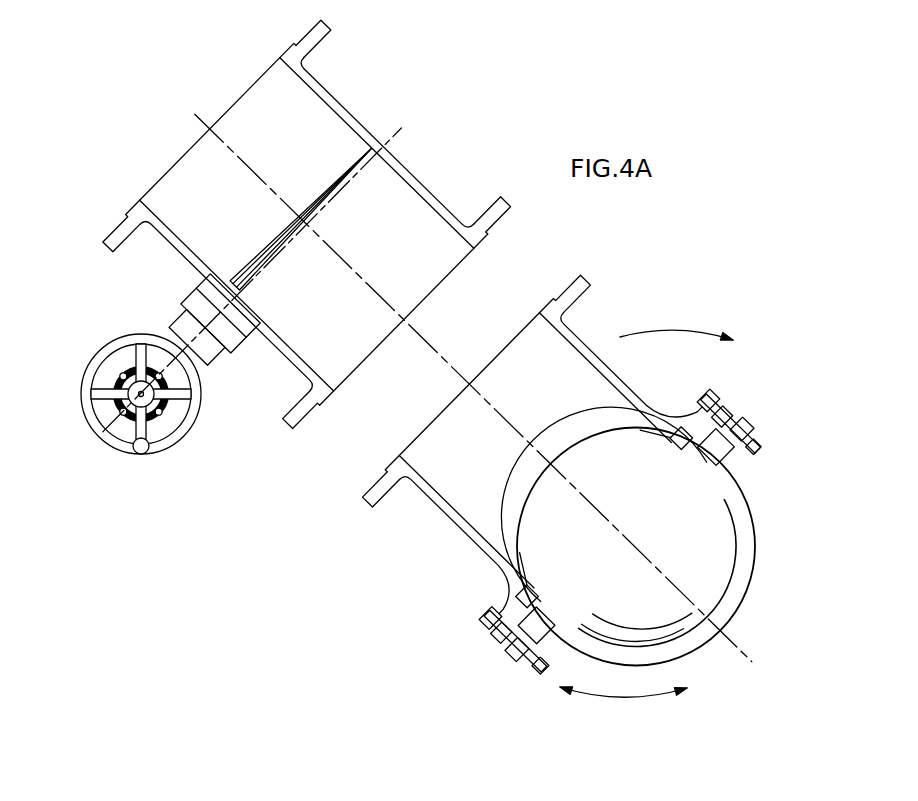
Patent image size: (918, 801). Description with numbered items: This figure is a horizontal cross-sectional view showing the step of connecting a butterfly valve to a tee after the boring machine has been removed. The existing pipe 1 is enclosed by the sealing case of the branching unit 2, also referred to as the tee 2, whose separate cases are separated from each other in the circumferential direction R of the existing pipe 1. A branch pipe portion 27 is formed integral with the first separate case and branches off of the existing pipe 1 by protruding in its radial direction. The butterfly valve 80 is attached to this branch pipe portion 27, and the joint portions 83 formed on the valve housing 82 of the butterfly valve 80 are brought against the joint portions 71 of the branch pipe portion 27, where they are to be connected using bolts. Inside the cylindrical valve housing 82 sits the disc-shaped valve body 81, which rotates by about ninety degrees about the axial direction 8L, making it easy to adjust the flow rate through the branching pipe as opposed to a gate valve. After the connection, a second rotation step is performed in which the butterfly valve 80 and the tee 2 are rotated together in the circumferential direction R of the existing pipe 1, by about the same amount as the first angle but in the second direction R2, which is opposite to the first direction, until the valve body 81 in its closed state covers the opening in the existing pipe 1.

The existing pipe 1 is at (577, 442).
The branching unit (tee) 2 is at (470, 557).
The branch pipe portion 27 is at (538, 448).
The joint portions 71 is at (475, 390).
The butterfly valve 80 is at (255, 387).
The valve body 81 is at (302, 216).
The valve housing 82 is at (307, 225).
The joint portions 83 is at (398, 314).
The axial direction 8L is at (282, 250).
The circumferential direction R is at (623, 710).
The second direction R2 is at (676, 319).